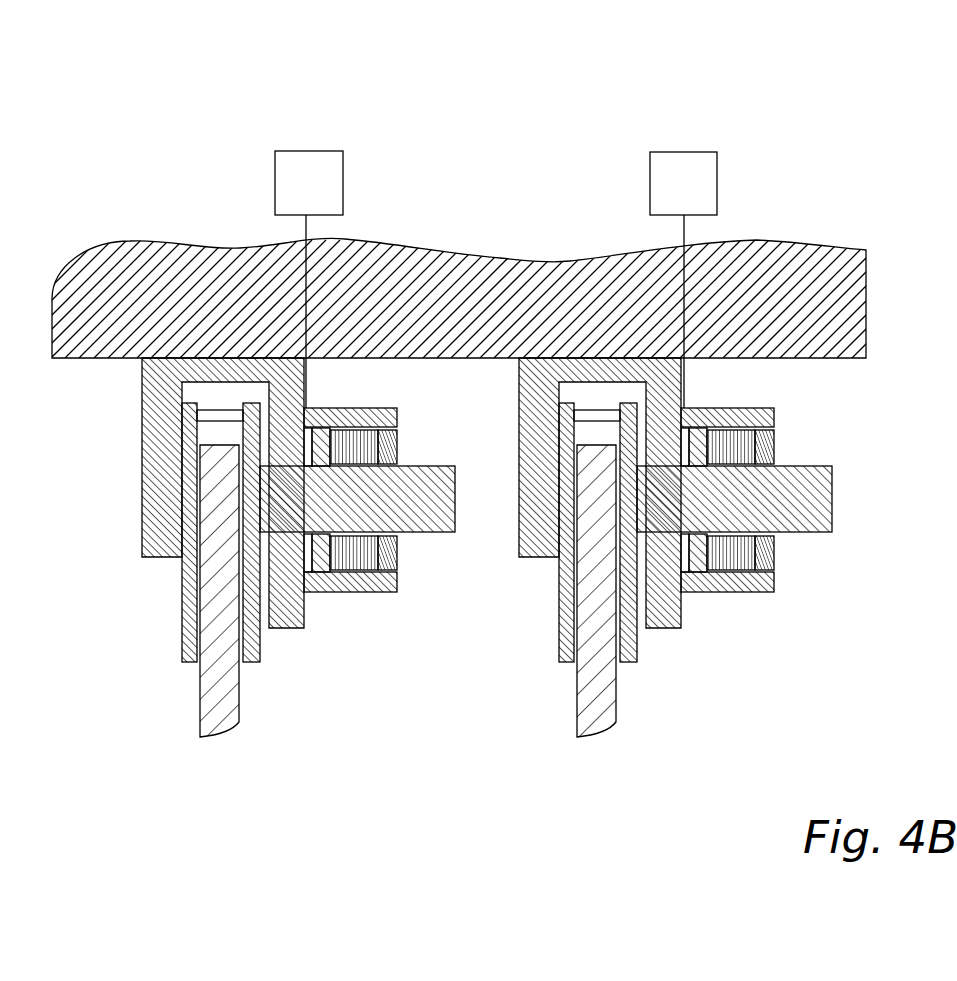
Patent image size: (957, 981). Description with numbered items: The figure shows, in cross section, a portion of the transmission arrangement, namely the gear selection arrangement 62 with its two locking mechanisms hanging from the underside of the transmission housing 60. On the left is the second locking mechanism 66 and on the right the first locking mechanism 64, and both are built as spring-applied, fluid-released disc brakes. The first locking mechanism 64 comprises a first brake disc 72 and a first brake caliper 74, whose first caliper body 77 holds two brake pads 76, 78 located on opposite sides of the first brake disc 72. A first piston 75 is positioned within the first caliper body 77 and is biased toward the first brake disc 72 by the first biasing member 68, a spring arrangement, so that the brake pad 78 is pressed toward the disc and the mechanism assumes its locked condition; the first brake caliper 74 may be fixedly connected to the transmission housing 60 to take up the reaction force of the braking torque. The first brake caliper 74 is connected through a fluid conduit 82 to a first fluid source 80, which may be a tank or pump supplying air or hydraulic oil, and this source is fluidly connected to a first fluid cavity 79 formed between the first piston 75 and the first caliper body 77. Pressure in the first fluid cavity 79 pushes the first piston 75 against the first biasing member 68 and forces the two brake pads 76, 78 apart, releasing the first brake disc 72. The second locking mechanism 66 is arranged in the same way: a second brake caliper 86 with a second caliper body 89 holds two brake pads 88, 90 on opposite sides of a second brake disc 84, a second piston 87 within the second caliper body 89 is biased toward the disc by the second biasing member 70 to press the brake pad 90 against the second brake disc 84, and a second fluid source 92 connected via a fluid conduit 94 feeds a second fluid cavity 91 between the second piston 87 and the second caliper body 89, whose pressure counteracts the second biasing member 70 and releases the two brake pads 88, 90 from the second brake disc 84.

The transmission housing 60 is at (478, 268).
The gear selection arrangement 62 is at (392, 800).
The first locking mechanism 64 is at (691, 504).
The second locking mechanism 66 is at (299, 486).
The first biasing member 68 is at (767, 553).
The second biasing member 70 is at (378, 550).
The first brake disc 72 is at (603, 695).
The first brake caliper 74 is at (787, 409).
The first piston 75 is at (812, 493).
The brake pad 76 is at (558, 640).
The first caliper body 77 is at (664, 397).
The brake pad 78 is at (635, 643).
The first fluid cavity 79 is at (743, 442).
The first fluid source 80 is at (684, 150).
The fluid conduit 82 is at (682, 238).
The second brake disc 84 is at (223, 688).
The second brake caliper 86 is at (407, 397).
The second piston 87 is at (430, 482).
The brake pad 88 is at (182, 628).
The second caliper body 89 is at (286, 397).
The brake pad 90 is at (253, 643).
The second fluid cavity 91 is at (310, 437).
The second fluid source 92 is at (306, 150).
The fluid conduit 94 is at (304, 230).